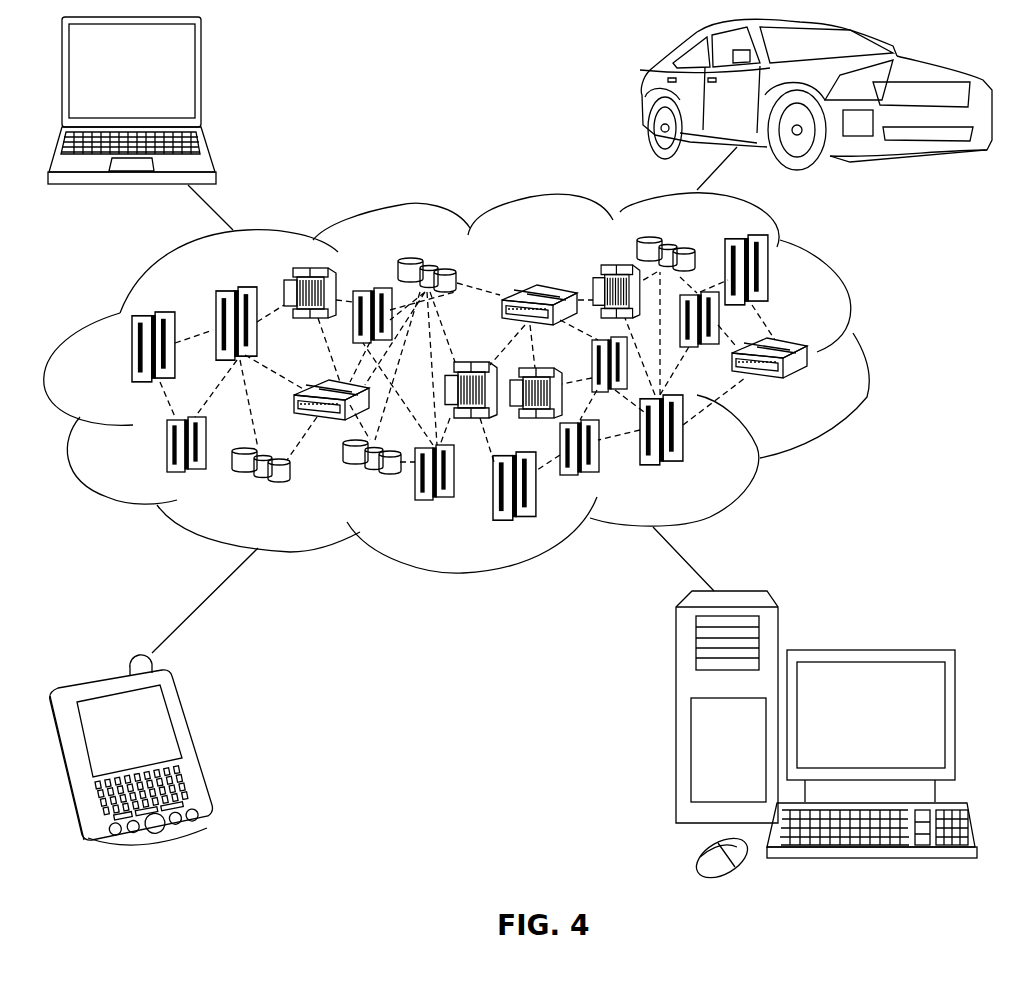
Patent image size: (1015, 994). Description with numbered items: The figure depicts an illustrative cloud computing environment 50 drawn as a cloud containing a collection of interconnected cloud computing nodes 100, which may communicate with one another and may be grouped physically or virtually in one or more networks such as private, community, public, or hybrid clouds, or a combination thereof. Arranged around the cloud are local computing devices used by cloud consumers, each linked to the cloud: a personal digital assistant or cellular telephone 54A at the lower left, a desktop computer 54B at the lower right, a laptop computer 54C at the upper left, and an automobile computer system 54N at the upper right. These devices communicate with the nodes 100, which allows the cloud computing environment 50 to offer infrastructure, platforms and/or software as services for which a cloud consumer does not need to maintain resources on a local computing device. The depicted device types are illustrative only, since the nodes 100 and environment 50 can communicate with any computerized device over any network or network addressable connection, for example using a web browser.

The personal digital assistant (PDA) or cellular telephone 54A is at (192, 745).
The desktop computer 54B is at (867, 648).
The laptop computer 54C is at (204, 80).
The automobile computer system 54N is at (643, 95).
The cloud computing environment 50 is at (873, 353).
The cloud computing nodes 100 is at (809, 387).